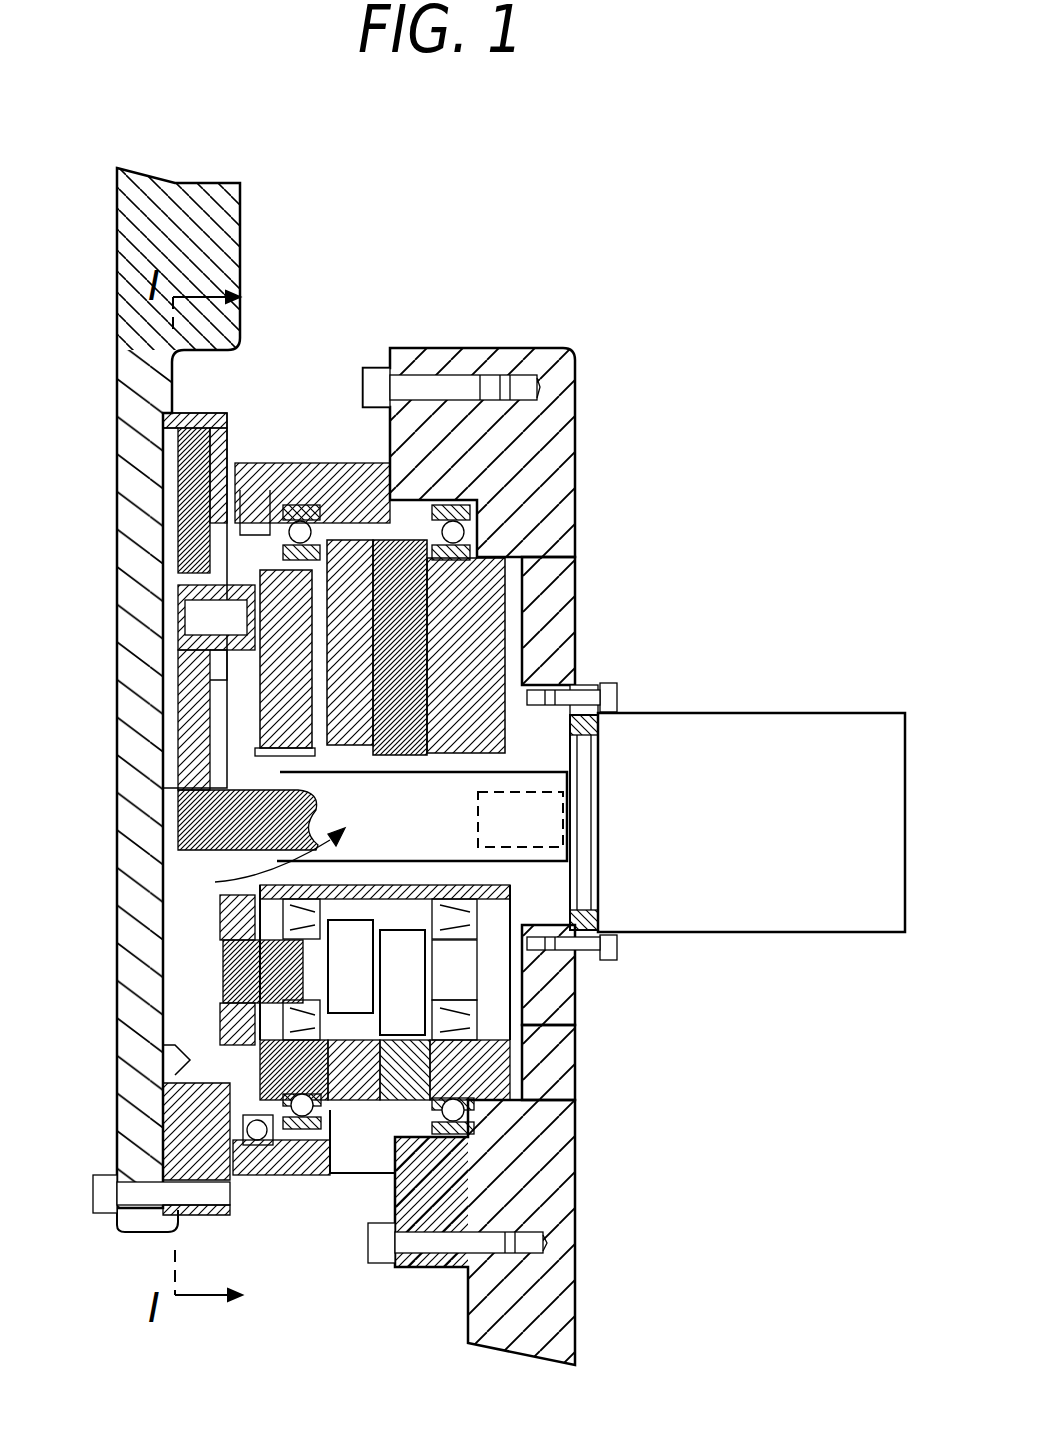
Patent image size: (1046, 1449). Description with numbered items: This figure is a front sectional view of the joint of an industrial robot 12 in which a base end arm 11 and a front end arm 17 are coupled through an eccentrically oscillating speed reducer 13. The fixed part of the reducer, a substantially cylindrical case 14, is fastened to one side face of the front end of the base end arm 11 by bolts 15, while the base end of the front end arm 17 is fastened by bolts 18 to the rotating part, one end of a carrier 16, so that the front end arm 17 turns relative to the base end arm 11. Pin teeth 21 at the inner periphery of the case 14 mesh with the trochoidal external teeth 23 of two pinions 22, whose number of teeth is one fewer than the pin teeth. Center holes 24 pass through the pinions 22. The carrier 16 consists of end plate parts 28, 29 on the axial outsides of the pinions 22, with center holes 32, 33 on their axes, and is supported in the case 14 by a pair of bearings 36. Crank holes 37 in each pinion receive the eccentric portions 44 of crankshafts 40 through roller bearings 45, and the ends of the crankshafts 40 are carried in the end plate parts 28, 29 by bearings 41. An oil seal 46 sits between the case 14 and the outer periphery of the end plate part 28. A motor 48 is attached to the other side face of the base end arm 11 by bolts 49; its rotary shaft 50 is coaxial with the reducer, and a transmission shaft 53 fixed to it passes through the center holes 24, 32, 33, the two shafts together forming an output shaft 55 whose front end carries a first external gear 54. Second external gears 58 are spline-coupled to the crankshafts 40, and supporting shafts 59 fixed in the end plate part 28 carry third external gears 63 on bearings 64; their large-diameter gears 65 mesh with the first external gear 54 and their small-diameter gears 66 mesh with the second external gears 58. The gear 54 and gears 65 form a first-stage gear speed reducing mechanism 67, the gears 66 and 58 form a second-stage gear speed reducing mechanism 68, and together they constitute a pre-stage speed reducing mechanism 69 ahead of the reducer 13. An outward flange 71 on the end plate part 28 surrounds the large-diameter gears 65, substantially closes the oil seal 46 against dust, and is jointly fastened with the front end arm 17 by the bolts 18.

The base end arm 11 is at (555, 1297).
The industrial robot 12 is at (604, 837).
The eccentrically oscillating speed reducer 13 is at (560, 540).
The case 14 is at (340, 480).
The bolts 15 is at (438, 372).
The carrier 16 is at (540, 590).
The front end arm 17 is at (140, 1050).
The bolts 18 is at (100, 1185).
The pin teeth 21 is at (325, 1175).
The pinions 22 is at (420, 1120).
The external teeth 23 is at (350, 1175).
The center holes 24 is at (415, 775).
The end plate part 28 is at (285, 680).
The end plate part 29 is at (505, 658).
The center hole 32 is at (275, 760).
The center hole 33 is at (480, 880).
The bearings 36 is at (462, 525).
The crank holes 37 is at (350, 1013).
The crankshafts 40 is at (505, 985).
The bearings 41 is at (220, 1040).
The eccentric portions 44 is at (400, 920).
The roller bearings 45 is at (520, 1060).
The oil seal 46 is at (250, 1175).
The motor 48 is at (795, 725).
The bolts 49 is at (618, 690).
The rotary shaft 50 is at (598, 848).
The transmission shaft 53 is at (505, 785).
The first external gear 54 is at (178, 845).
The output shaft 55 is at (261, 862).
The second external gears 58 is at (225, 1008).
The supporting shafts 59 is at (188, 612).
The third external gears 63 is at (150, 540).
The bearings 64 is at (178, 660).
The large-diameter gears 65 is at (150, 458).
The small-diameter gears 66 is at (215, 685).
The first-stage gear speed reducing mechanism 67 is at (160, 430).
The second-stage gear speed reducing mechanism 68 is at (262, 500).
The pre-stage speed reducing mechanism 69 is at (150, 1085).
The outward flange 71 is at (200, 413).